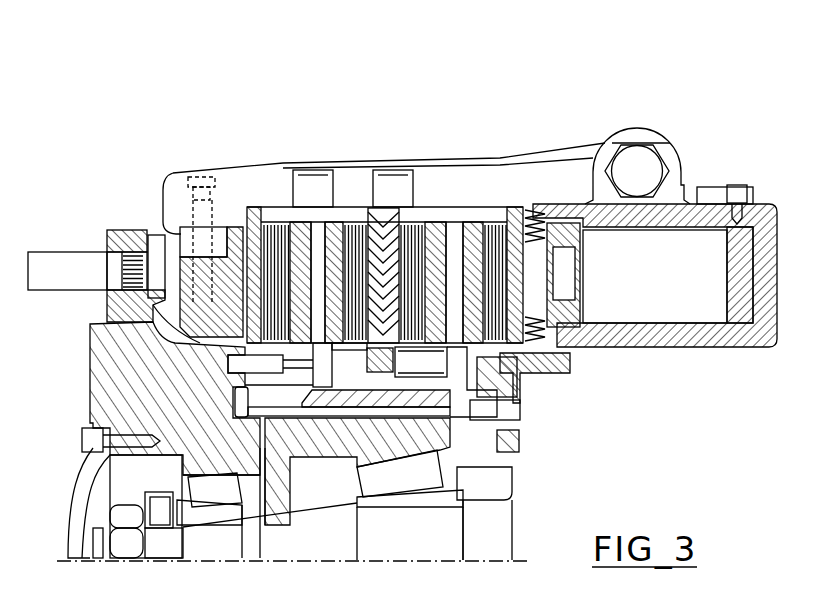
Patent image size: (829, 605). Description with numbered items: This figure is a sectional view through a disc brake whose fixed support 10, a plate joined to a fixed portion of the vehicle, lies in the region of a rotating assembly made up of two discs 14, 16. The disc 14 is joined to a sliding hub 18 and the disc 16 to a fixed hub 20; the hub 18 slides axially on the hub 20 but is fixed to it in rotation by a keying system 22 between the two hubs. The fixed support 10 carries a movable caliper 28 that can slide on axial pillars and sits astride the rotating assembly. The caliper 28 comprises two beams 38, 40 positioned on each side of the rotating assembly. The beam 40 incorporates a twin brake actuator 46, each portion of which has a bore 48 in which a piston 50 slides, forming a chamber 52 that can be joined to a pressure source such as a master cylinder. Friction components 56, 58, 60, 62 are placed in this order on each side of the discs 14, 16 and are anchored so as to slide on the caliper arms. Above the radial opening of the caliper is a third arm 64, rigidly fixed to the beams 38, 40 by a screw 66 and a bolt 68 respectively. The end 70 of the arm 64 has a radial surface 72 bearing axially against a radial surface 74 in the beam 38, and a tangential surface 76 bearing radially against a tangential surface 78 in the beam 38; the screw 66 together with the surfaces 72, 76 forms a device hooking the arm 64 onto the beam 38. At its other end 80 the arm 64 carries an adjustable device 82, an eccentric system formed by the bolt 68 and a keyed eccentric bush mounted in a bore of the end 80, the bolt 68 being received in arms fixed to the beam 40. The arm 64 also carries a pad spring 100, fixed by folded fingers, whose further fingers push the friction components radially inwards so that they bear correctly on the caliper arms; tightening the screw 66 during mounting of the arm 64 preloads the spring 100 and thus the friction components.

The fixed support 10 is at (520, 382).
The disc 14 is at (457, 243).
The disc 16 is at (318, 240).
The sliding hub 18 is at (373, 393).
The fixed hub 20 is at (123, 380).
The keying system 22 is at (337, 410).
The movable caliper 28 is at (632, 112).
The beam 38 is at (185, 345).
The beam 40 is at (700, 203).
The twin brake actuator 46 is at (780, 315).
The bore 48 is at (668, 322).
The piston 50 is at (627, 313).
The chamber 52 is at (743, 243).
The friction component 56 is at (500, 215).
The friction component 58 is at (428, 222).
The friction component 60 is at (360, 235).
The friction component 62 is at (270, 222).
The third arm 64 is at (442, 205).
The screw 66 is at (198, 180).
The bolt 68 is at (643, 173).
The end of the arm 70 is at (172, 182).
The radial surface 72 is at (190, 218).
The radial surface 74 is at (178, 195).
The tangential surface 76 is at (218, 243).
The tangential surface 78 is at (160, 312).
The end of the arm 80 is at (575, 162).
The adjustable device 82 is at (653, 130).
The pad spring 100 is at (305, 180).